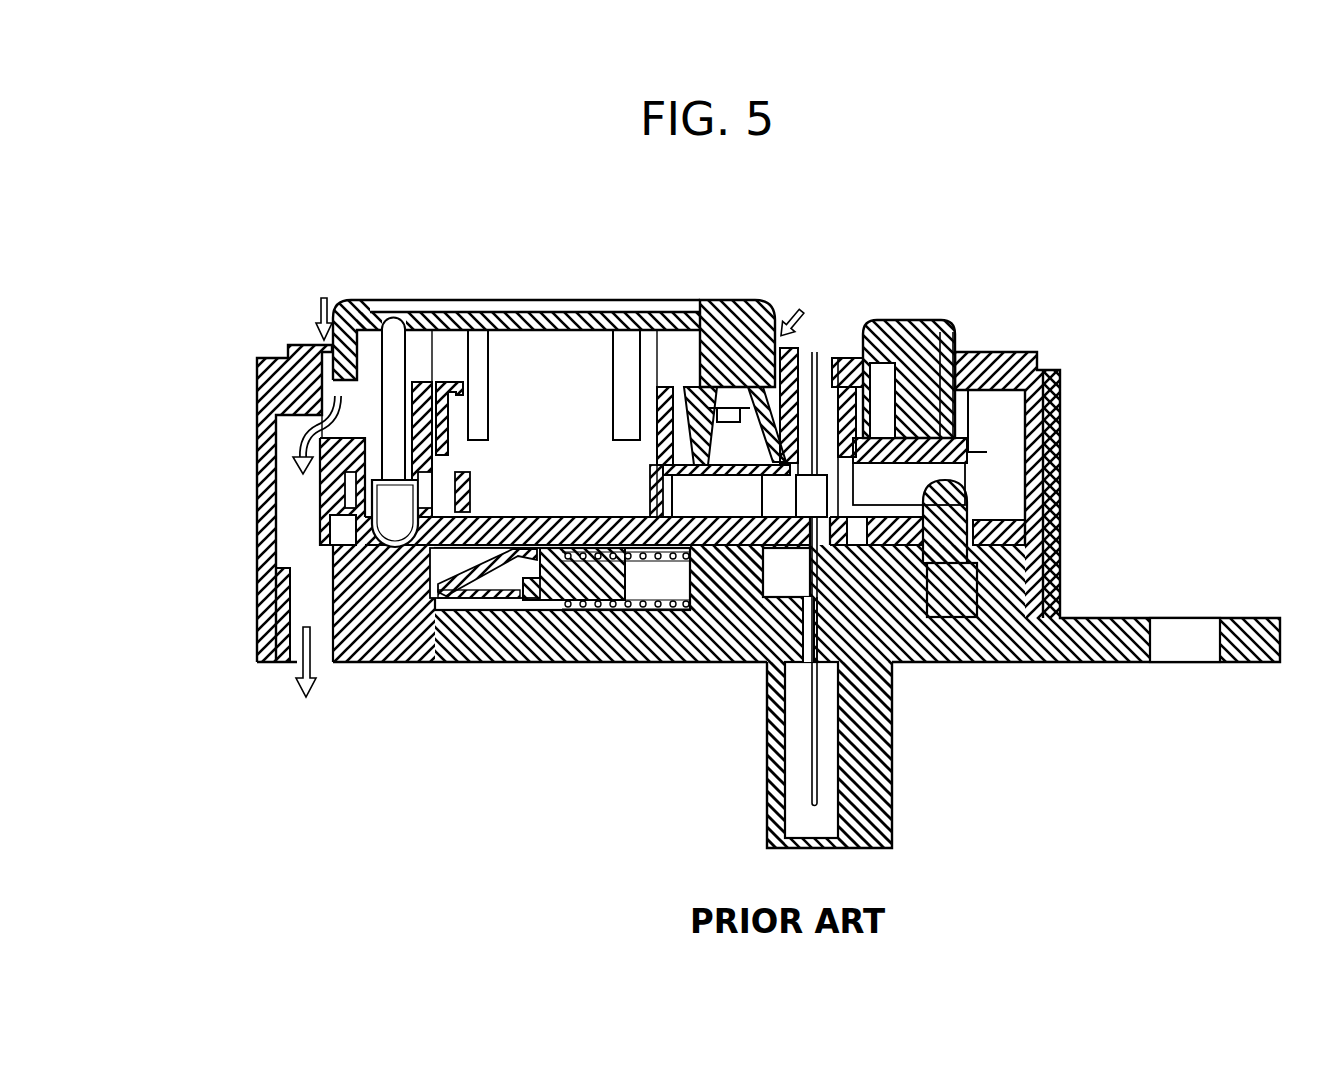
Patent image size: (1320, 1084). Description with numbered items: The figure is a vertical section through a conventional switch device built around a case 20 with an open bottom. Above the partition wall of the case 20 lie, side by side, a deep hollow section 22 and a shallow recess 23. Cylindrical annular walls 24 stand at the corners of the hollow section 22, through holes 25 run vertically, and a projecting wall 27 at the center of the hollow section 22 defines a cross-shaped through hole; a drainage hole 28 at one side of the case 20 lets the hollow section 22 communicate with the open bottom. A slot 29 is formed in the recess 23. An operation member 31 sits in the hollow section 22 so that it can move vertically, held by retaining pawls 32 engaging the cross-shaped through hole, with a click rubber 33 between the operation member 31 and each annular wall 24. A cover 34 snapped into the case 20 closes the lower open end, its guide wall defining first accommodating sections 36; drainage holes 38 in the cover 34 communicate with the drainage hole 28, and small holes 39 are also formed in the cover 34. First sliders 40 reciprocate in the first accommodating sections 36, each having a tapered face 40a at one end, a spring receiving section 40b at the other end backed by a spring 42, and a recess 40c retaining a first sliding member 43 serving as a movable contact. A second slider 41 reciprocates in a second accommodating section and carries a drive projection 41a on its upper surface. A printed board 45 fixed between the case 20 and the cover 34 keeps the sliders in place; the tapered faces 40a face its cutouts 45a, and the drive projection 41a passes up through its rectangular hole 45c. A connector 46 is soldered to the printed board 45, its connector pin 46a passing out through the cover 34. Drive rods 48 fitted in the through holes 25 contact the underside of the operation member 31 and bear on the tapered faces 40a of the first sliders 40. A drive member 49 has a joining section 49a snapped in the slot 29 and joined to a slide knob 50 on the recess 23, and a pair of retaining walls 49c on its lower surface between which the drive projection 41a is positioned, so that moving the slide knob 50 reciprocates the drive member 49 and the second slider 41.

The case 20 is at (252, 372).
The hollow section 22 is at (300, 440).
The recess 23 is at (846, 357).
The annular wall 24 is at (414, 388).
The through hole 25 is at (382, 380).
The projecting wall 27 is at (676, 395).
The drainage hole 28 is at (350, 432).
The slot 29 is at (946, 398).
The operation member 31 is at (690, 385).
The retaining pawl 32 is at (484, 400).
The click rubber 33 is at (725, 397).
The cover 34 is at (743, 665).
The first accommodating section 36 is at (362, 578).
The drainage hole 38 is at (305, 592).
The small hole 39 is at (838, 632).
The first slider 40 is at (538, 600).
The tapered face 40a is at (388, 556).
The spring receiving section 40b is at (618, 556).
The recess 40c is at (546, 570).
The second slider 41 is at (968, 600).
The drive projection 41a is at (958, 510).
The spring 42 is at (665, 557).
The first sliding member 43 is at (490, 583).
The printed board 45 is at (542, 505).
The cutout 45a is at (345, 527).
The rectangular hole 45c is at (980, 527).
The connector 46 is at (812, 475).
The connector pin 46a is at (812, 750).
The drive rod 48 is at (396, 330).
The drive member 49 is at (962, 452).
The joining section 49a is at (935, 415).
The retaining wall 49c is at (963, 478).
The slide knob 50 is at (908, 320).